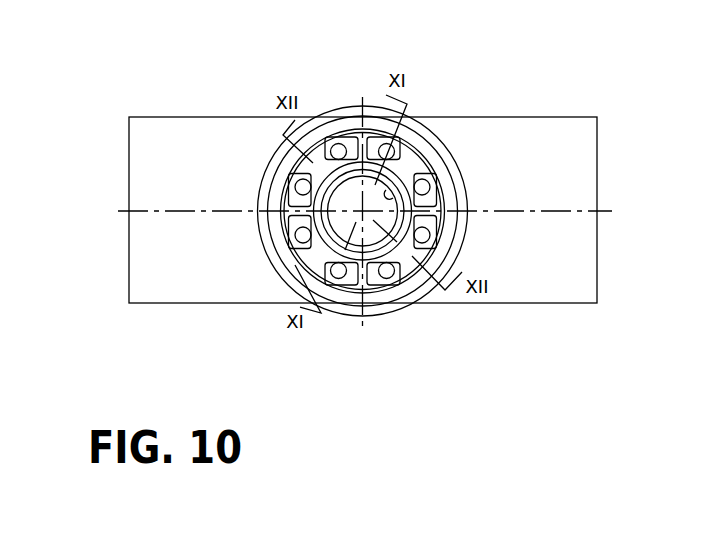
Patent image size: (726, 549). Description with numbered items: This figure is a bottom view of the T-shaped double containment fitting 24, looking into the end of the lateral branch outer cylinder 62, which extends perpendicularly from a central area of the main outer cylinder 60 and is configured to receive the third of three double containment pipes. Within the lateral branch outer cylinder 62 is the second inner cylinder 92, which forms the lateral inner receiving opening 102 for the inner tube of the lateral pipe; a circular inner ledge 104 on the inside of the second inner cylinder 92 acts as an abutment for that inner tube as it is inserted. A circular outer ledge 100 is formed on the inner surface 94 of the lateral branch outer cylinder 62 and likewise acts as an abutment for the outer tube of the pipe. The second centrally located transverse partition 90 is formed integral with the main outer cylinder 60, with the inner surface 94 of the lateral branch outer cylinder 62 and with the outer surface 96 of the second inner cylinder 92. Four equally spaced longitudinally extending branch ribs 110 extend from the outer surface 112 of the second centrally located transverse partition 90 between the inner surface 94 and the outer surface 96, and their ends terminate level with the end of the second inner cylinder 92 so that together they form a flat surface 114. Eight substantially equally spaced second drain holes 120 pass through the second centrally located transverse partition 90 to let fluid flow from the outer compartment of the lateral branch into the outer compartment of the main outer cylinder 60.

The T-shaped double containment fitting 24 is at (623, 290).
The main outer cylinder 60 is at (180, 116).
The lateral branch outer cylinder 62 is at (461, 189).
The second centrally located transverse partition 90 is at (329, 152).
The second inner cylinder 92 is at (407, 255).
The inner surface of the lateral branch outer cylinder 94 is at (320, 262).
The outer surface of the second inner cylinder 96 is at (422, 252).
The circular outer ledge 100 is at (295, 214).
The lateral inner receiving opening 102 is at (372, 246).
The circular inner ledge 104 is at (382, 198).
The longitudinally extending branch ribs 110 is at (345, 145).
The outer surface of the second centrally located transverse partition 112 is at (337, 268).
The flat surface 114 is at (356, 205).
The second drain holes 120 is at (334, 150).